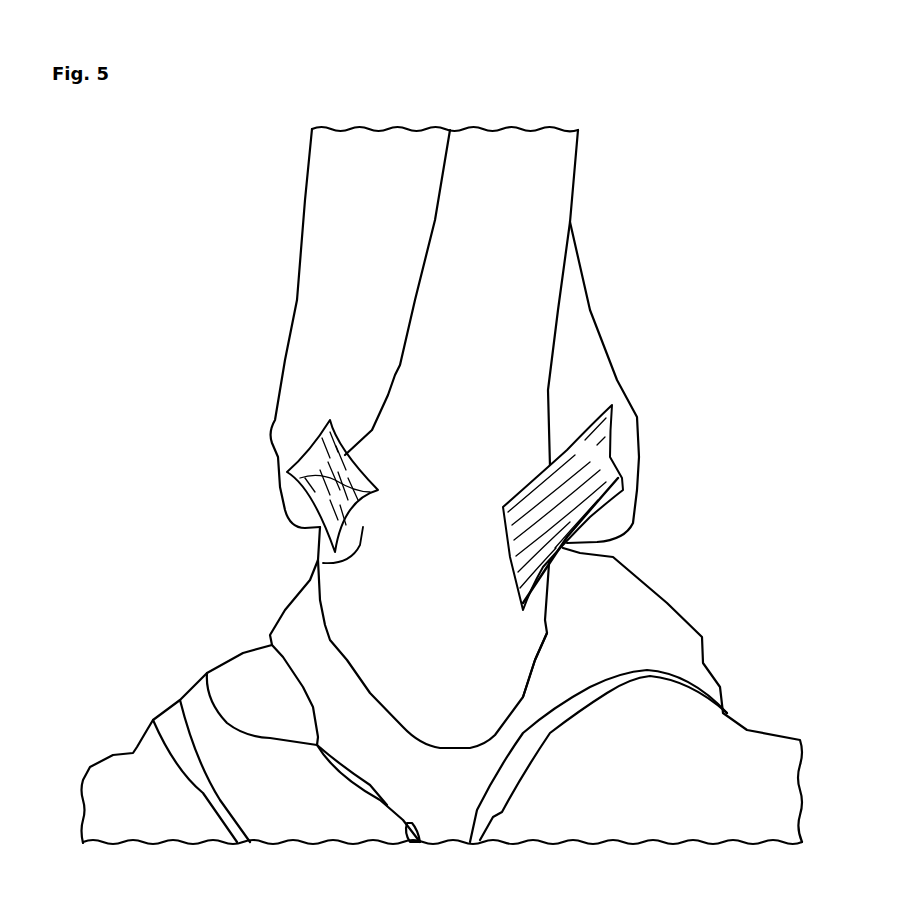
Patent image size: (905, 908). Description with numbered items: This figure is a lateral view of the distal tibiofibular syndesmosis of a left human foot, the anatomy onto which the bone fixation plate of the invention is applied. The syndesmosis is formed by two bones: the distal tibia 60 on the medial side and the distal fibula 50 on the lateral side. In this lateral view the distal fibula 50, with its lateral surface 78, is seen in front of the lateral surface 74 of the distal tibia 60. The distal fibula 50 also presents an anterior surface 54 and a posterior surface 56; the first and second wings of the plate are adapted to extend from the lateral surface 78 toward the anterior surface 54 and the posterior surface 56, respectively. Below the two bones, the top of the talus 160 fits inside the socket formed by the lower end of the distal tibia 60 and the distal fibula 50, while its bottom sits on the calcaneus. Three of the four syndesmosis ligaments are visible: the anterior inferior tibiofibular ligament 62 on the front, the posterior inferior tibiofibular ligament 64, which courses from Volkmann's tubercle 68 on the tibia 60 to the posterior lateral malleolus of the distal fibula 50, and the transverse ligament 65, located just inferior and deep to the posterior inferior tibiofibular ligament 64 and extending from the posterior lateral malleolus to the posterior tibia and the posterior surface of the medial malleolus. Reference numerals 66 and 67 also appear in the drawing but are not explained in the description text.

The distal fibula 50 is at (556, 162).
The distal tibia 60 is at (328, 208).
The lateral surface of the distal tibia 74 is at (320, 248).
The lateral surface of the distal fibula 78 is at (545, 240).
The protective pad 66 is at (307, 447).
The anterior inferior tibiofibular ligament 62 is at (307, 490).
The hem 67 is at (313, 557).
The anterior surface of the distal fibula 54 is at (322, 608).
The posterior surface of the fibula 56 is at (550, 631).
The talus 160 is at (672, 637).
The posterior inferior tibiofibular ligament 64 is at (600, 433).
The Volkmann's tubercle 68 is at (623, 455).
The transverse ligament 65 is at (597, 503).